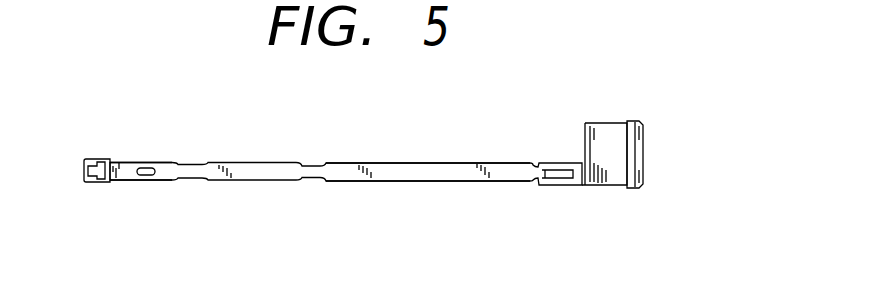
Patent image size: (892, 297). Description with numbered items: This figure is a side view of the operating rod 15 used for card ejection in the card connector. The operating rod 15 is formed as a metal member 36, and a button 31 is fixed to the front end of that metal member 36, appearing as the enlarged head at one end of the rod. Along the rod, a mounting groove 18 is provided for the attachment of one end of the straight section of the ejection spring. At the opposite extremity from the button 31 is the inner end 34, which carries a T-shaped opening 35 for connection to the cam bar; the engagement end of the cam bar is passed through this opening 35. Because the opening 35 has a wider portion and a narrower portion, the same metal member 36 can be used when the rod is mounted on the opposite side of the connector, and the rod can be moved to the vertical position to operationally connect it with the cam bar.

The operating rod 15 is at (475, 121).
The mounting groove 18 is at (145, 165).
The button 31 is at (623, 152).
The inner end 34 is at (146, 180).
The opening 35 is at (104, 161).
The metal member 36 is at (348, 163).